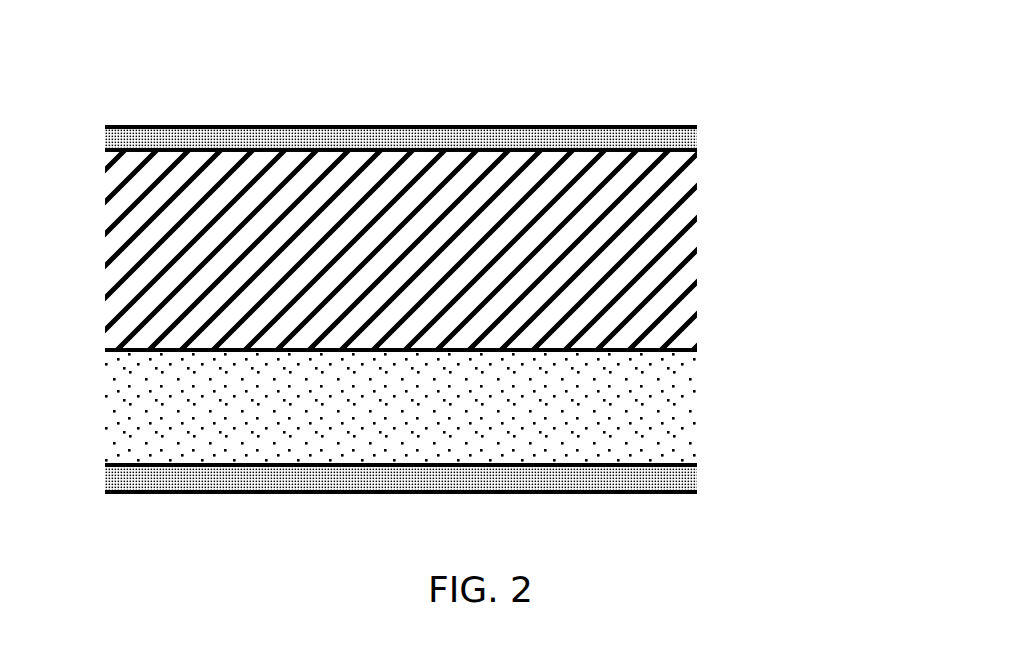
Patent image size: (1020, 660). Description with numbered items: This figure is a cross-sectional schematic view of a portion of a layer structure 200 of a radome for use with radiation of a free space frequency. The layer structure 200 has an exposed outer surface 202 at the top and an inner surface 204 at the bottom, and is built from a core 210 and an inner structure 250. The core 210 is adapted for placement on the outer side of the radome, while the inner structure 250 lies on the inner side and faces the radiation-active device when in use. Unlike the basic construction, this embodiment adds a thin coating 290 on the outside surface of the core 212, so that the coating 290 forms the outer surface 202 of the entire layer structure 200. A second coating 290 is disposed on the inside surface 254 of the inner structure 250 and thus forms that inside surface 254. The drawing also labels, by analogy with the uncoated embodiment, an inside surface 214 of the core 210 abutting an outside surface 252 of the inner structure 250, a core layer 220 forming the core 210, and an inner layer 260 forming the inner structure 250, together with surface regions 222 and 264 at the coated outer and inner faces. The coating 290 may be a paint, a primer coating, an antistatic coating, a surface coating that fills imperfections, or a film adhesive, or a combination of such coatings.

The layer structure 200 is at (692, 85).
The outer surface 202 is at (325, 108).
The inner surface 204 is at (314, 512).
The core 210 is at (718, 152).
The outside surface of the core 212 is at (214, 138).
The second side of first layer 214 is at (165, 372).
The first layer body 220 is at (478, 190).
The first layer surface region 222 is at (424, 138).
The inner structure 250 is at (718, 352).
The first side of second layer 252 is at (168, 340).
The inside surface of the inner structure 254 is at (226, 478).
The second layer body 260 is at (492, 440).
The second layer surface region 264 is at (430, 478).
The coating 290 is at (592, 140).